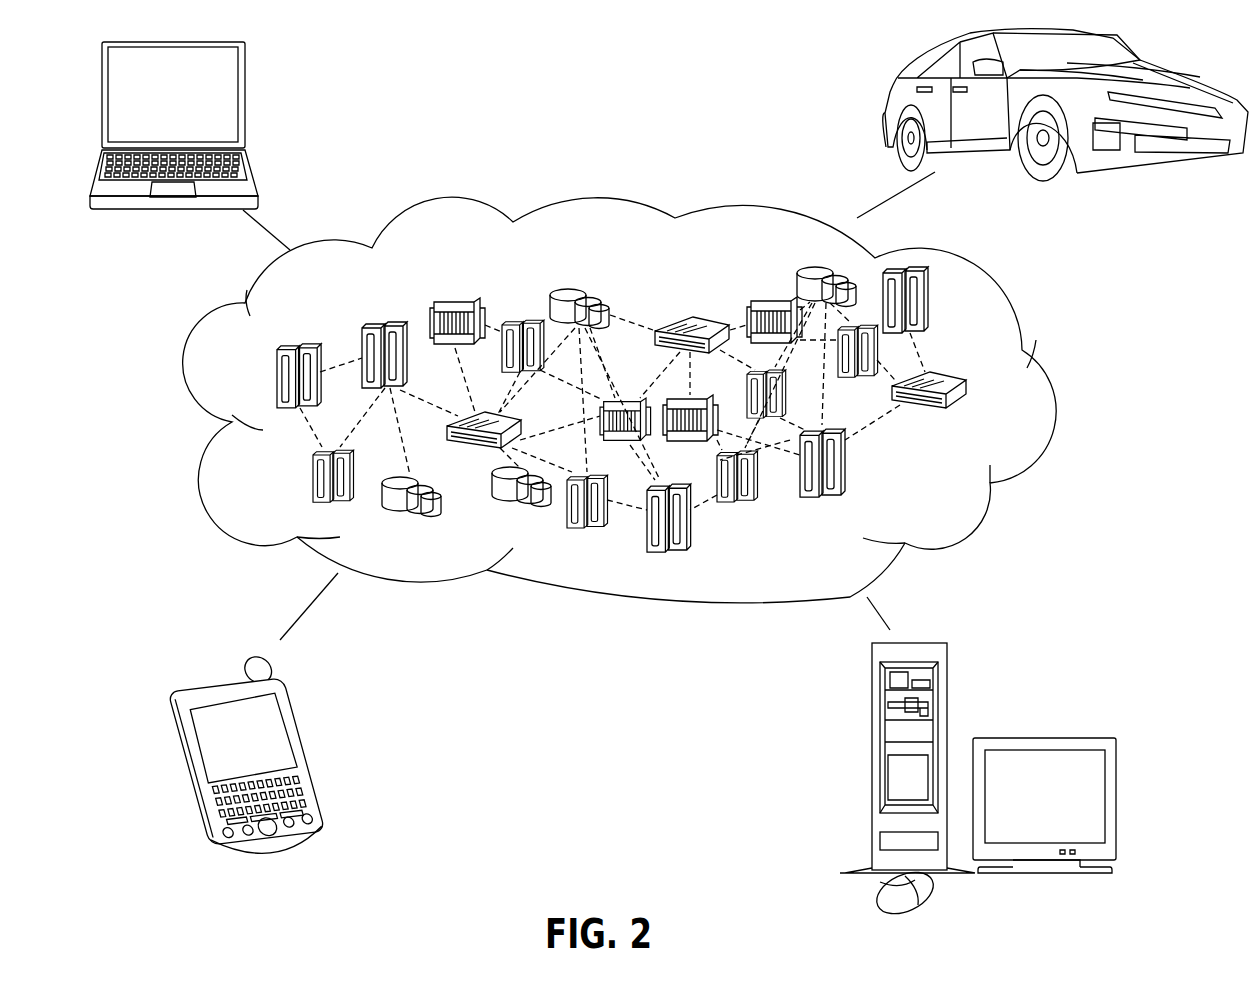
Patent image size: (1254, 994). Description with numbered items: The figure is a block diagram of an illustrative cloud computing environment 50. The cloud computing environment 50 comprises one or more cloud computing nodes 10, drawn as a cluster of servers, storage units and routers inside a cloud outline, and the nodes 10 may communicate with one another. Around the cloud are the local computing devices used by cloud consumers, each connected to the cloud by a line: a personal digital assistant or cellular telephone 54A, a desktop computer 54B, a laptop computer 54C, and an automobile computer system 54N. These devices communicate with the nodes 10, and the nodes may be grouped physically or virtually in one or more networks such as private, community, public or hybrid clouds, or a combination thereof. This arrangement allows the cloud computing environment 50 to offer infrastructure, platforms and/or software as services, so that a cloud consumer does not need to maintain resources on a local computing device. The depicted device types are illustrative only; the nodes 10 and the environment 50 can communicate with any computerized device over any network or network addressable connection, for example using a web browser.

The cloud computing node 10 is at (948, 489).
The cloud computing environment 50 is at (1038, 387).
The personal digital assistant or cellular telephone 54A is at (297, 718).
The desktop computer 54B is at (870, 701).
The laptop computer 54C is at (248, 83).
The automobile computer system 54N is at (888, 97).